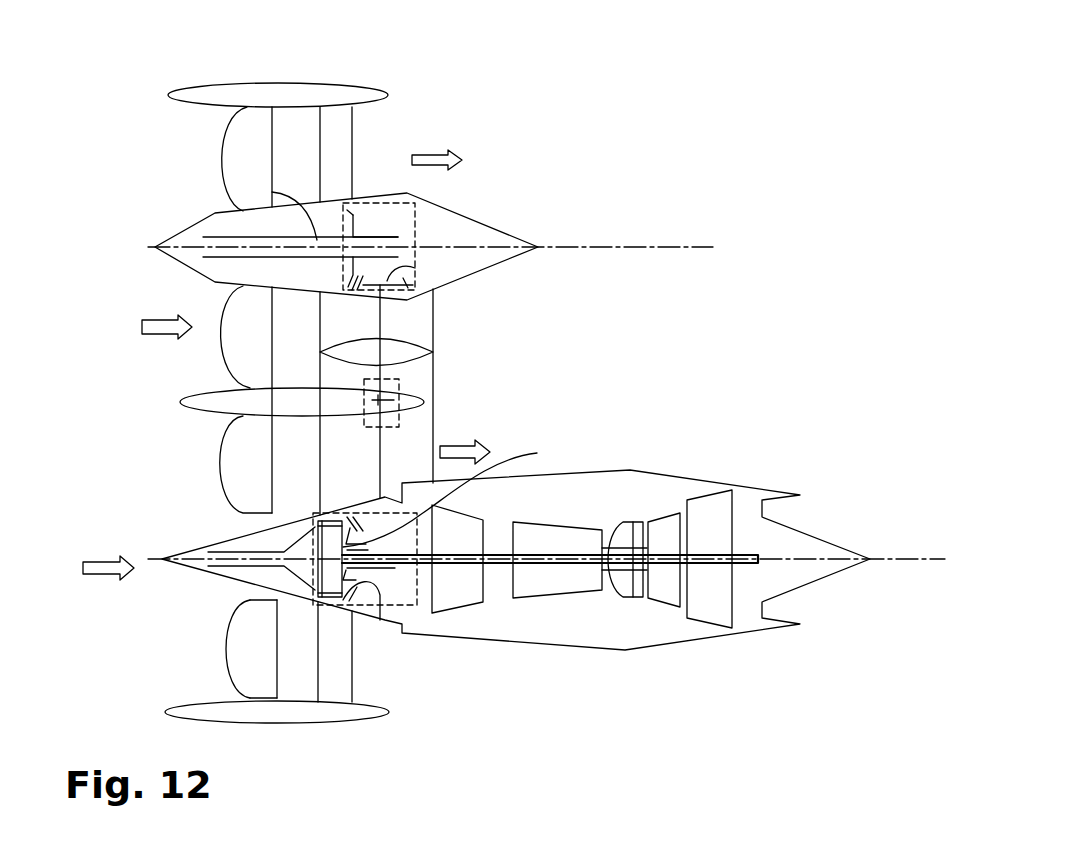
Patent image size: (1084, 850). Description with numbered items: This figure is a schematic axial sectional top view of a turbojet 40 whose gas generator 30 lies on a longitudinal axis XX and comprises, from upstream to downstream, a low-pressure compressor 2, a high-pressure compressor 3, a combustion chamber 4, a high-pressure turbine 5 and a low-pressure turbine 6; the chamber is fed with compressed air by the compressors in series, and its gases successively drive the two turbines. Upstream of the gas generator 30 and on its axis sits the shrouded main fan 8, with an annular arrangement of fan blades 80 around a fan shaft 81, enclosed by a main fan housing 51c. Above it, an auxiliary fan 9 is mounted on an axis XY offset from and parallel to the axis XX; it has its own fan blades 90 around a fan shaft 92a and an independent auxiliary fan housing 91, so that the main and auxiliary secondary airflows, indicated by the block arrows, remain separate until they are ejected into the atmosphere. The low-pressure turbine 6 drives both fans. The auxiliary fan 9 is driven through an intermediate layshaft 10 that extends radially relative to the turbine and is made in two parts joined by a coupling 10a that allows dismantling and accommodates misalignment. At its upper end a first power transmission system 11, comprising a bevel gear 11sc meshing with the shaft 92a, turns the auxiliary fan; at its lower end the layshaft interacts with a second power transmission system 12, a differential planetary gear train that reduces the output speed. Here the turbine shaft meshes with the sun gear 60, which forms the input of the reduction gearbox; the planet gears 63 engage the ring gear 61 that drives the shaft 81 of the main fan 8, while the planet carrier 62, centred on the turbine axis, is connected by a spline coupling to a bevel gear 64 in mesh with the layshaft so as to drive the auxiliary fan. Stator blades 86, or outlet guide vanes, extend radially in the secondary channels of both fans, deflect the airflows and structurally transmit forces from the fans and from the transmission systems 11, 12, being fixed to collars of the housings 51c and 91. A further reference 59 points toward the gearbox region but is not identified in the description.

The low-pressure compressor 2 is at (465, 594).
The high-pressure compressor 3 is at (553, 587).
The combustion chamber 4 is at (633, 587).
The high-pressure turbine 5 is at (662, 525).
The low-pressure turbine 6 is at (703, 515).
The main fan 8 is at (223, 695).
The auxiliary fan 9 is at (223, 105).
The intermediate layshaft 10 is at (442, 378).
The coupling 10a is at (390, 407).
The first power transmission system 11 is at (410, 220).
The bevel gear 11sc is at (415, 268).
The second power transmission system 12 is at (400, 582).
The gas generator 30 is at (599, 658).
The turbojet 40 is at (799, 228).
The main fan housing 51c is at (248, 712).
The drive shaft 59 is at (312, 522).
The sun gear 60 is at (315, 558).
The ring gear 61 is at (342, 598).
The planet carrier 62 is at (453, 504).
The planet gears 63 is at (290, 601).
The bevel gear 64 is at (380, 620).
The fan blades 80 is at (253, 670).
The fan shaft 81 is at (257, 560).
The stator blades 86 is at (340, 120).
The fan blades 90 is at (255, 128).
The auxiliary fan housing 91 is at (278, 95).
The fan shaft 92a is at (290, 197).
The auxiliary fan axis XY is at (671, 246).
The longitudinal axis XX is at (914, 557).